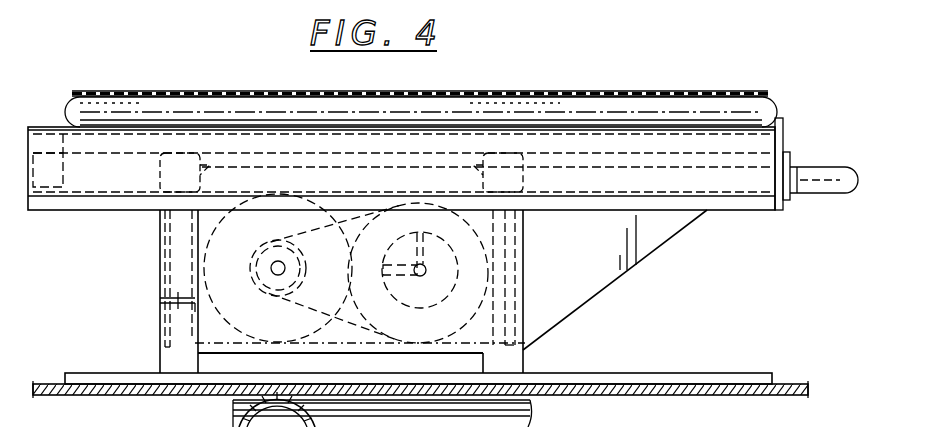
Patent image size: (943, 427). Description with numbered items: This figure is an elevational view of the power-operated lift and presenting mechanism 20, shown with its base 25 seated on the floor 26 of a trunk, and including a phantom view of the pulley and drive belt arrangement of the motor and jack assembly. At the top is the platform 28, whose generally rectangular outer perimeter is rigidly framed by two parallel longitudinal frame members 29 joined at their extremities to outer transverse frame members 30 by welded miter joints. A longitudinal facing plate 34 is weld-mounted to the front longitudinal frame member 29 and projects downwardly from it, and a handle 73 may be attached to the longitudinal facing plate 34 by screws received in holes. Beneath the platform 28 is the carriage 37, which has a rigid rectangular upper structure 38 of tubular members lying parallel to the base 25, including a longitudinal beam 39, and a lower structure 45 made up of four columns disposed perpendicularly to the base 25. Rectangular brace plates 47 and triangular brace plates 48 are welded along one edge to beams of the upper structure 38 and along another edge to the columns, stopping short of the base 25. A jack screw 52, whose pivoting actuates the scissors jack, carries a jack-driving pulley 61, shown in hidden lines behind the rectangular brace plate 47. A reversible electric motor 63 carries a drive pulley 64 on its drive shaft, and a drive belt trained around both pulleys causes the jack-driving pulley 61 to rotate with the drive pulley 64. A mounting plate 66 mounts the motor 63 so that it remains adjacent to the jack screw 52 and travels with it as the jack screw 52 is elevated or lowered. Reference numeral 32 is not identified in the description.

The power-operated lift and presenting mechanism 20 is at (646, 79).
The base 25 is at (645, 373).
The floor 26 is at (703, 397).
The platform 28 is at (433, 90).
The longitudinal frame members 29 is at (82, 105).
The outer transverse frame members 30 is at (403, 111).
The track 32 is at (560, 415).
The longitudinal facing plate 34 is at (785, 138).
The carriage 37 is at (157, 262).
The upper structure 38 is at (140, 215).
The longitudinal beam 39 is at (382, 409).
The lower structure 45 is at (157, 335).
The rectangular brace plate 47 is at (232, 345).
The triangular brace plate 48 is at (597, 268).
The jack screw 52 is at (418, 273).
The jack-driving pulley 61 is at (527, 300).
The reversible electric motor 63 is at (178, 287).
The drive pulley 64 is at (301, 268).
The mounting plate 66 is at (360, 361).
The handle 73 is at (822, 185).